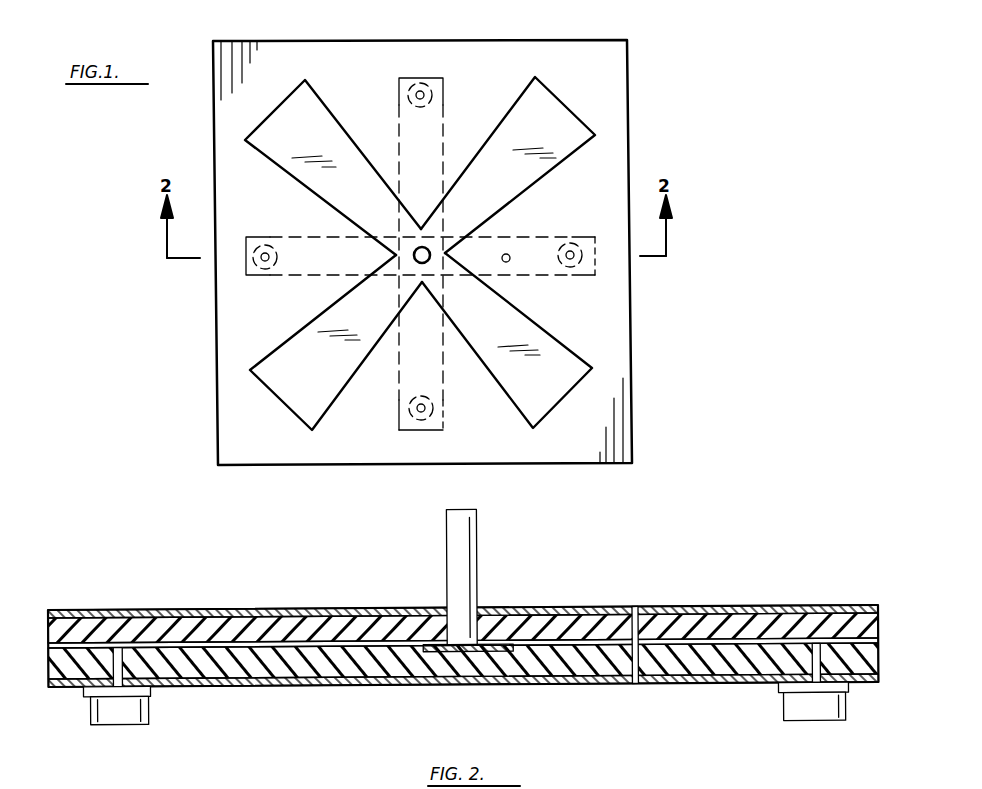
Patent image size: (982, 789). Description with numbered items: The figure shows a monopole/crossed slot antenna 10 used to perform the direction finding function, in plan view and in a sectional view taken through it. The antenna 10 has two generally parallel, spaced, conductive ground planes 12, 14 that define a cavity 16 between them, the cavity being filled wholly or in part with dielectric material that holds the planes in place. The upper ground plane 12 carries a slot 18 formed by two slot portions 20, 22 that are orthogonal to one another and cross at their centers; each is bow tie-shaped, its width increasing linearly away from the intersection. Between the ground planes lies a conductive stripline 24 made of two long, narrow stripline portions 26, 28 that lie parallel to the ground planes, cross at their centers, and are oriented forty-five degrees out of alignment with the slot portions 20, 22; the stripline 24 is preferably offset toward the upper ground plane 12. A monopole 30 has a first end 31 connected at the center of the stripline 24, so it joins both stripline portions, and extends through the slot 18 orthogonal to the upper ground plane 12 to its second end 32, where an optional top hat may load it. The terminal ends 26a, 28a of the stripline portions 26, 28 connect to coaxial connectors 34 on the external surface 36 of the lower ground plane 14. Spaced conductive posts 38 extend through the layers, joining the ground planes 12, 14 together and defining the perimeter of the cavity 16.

In FIG. 1, the monopole/crossed slot antenna 10 is at (660, 74).
In FIG. 2, the monopole/crossed slot antenna 10 is at (300, 733).
In FIG. 1, the upper ground plane 12 is at (218, 332).
In FIG. 2, the upper ground plane 12 is at (665, 610).
In FIG. 2, the lower ground plane 14 is at (516, 689).
In FIG. 2, the cavity 16 is at (702, 670).
In FIG. 1, the slot 18 is at (460, 256).
In FIG. 2, the slot 18 is at (520, 608).
In FIG. 1, the slot portion 20 is at (572, 132).
In FIG. 1, the slot portion 22 is at (318, 92).
In FIG. 1, the stripline 24 is at (325, 282).
In FIG. 2, the stripline 24 is at (392, 683).
In FIG. 1, the stripline portion 26 is at (303, 237).
In FIG. 2, the stripline portion 26 is at (258, 650).
In FIG. 1, the terminal end 26a is at (246, 275).
In FIG. 2, the terminal end 26a is at (106, 645).
In FIG. 1, the stripline portion 28 is at (413, 347).
In FIG. 2, the stripline portion 28 is at (430, 683).
In FIG. 1, the terminal end 28a is at (438, 80).
In FIG. 1, the monopole 30 is at (432, 245).
In FIG. 2, the monopole 30 is at (445, 547).
In FIG. 2, the first end 31 is at (463, 640).
In FIG. 2, the second end 32 is at (463, 512).
In FIG. 1, the coaxial connector 34 is at (406, 92).
In FIG. 2, the coaxial connector 34 is at (117, 727).
In FIG. 2, the external surface 36 is at (622, 688).
In FIG. 1, the conductive post 38 is at (510, 262).
In FIG. 2, the conductive post 38 is at (630, 617).